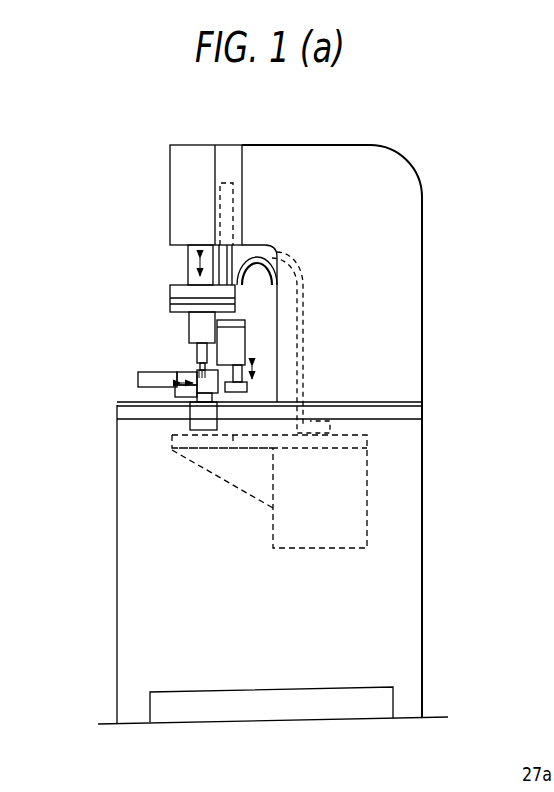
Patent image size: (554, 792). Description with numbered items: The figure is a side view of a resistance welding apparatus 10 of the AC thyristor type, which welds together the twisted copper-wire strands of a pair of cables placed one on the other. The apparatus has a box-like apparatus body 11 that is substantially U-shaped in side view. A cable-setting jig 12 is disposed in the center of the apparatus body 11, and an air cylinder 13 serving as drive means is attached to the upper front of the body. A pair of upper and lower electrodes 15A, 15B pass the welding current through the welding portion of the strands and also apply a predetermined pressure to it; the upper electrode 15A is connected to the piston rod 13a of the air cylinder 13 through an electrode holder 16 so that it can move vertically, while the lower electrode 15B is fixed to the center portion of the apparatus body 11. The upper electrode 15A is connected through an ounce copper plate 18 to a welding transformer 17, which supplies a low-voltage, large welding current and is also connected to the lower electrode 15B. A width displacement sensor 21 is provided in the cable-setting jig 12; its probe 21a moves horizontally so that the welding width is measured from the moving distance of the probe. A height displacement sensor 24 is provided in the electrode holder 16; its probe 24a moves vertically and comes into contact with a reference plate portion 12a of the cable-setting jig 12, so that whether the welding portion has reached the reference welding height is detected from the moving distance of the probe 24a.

The resistance welding apparatus 10 is at (441, 422).
The apparatus body 11 is at (108, 598).
The cable-setting jig 12 is at (166, 393).
The reference plate portion 12a is at (220, 396).
The air cylinder 13 is at (170, 160).
The piston rod 13a is at (188, 260).
The upper electrode 15A is at (200, 366).
The lower electrode 15B is at (190, 405).
The electrode holder 16 is at (189, 328).
The welding transformer 17 is at (367, 527).
The ounce copper plate 18 is at (260, 245).
The width displacement sensor 21 is at (128, 380).
The probe 21a is at (185, 372).
The height displacement sensor 24 is at (254, 341).
The probe 24a is at (258, 386).